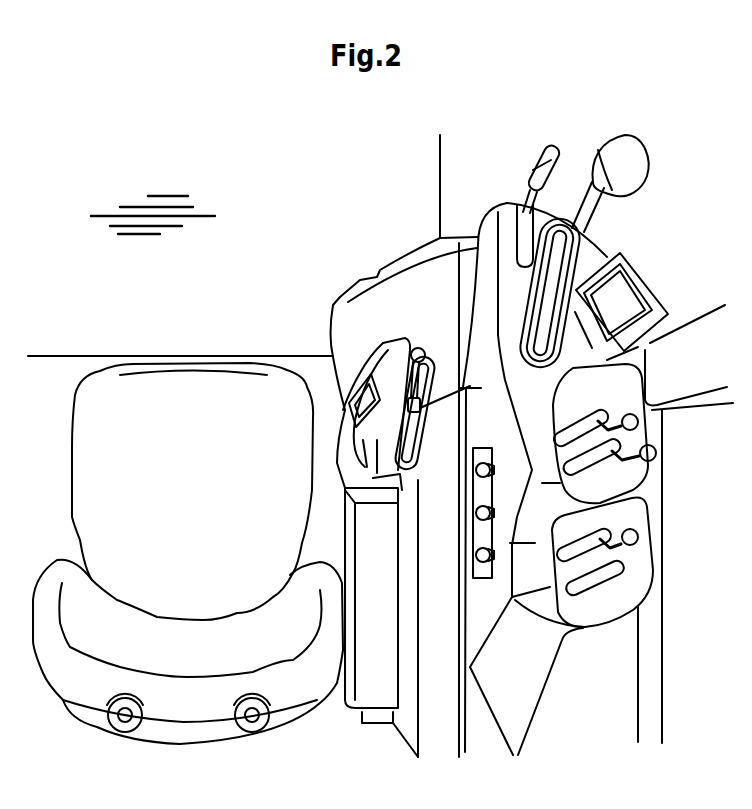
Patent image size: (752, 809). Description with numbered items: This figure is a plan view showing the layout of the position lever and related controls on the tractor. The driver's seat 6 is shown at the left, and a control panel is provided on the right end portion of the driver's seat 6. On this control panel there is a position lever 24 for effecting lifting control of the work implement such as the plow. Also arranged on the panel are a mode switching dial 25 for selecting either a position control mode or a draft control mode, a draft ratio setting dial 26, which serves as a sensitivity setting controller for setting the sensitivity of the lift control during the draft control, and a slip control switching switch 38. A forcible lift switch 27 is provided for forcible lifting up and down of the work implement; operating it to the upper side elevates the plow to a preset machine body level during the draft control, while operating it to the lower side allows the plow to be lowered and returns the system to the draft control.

The driver's seat 6 is at (85, 490).
The position lever 24 is at (448, 385).
The mode switching dial 25 is at (476, 472).
The draft ratio setting dial 26 is at (476, 510).
The forcible lift switch 27 is at (348, 402).
The slip control switching switch 38 is at (476, 555).